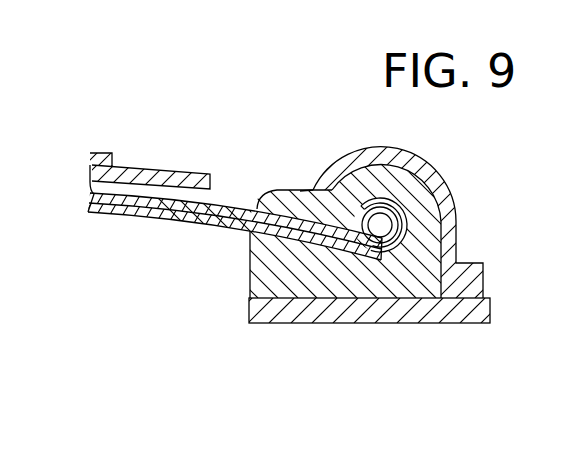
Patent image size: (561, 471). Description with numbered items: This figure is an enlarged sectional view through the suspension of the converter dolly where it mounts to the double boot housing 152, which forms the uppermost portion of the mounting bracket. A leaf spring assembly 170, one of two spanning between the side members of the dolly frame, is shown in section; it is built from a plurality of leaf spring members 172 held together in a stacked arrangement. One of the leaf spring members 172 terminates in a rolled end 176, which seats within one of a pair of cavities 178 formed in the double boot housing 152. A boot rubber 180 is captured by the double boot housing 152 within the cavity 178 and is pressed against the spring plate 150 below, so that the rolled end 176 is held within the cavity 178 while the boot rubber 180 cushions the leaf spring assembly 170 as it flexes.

The spring plate 150 is at (323, 323).
The double boot housing 152 is at (410, 150).
The leaf spring assembly 170 is at (237, 197).
The leaf spring member 172 is at (170, 205).
The rolled end 176 is at (404, 254).
The cavity 178 is at (329, 168).
The boot rubber 180 is at (272, 190).